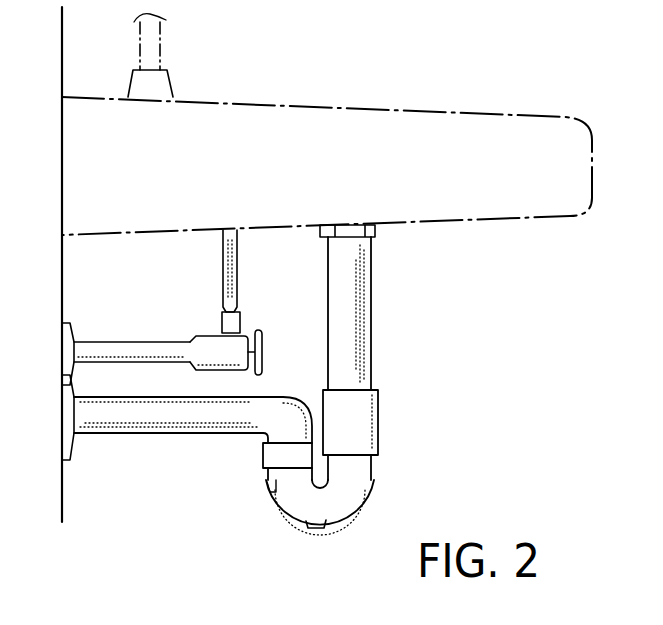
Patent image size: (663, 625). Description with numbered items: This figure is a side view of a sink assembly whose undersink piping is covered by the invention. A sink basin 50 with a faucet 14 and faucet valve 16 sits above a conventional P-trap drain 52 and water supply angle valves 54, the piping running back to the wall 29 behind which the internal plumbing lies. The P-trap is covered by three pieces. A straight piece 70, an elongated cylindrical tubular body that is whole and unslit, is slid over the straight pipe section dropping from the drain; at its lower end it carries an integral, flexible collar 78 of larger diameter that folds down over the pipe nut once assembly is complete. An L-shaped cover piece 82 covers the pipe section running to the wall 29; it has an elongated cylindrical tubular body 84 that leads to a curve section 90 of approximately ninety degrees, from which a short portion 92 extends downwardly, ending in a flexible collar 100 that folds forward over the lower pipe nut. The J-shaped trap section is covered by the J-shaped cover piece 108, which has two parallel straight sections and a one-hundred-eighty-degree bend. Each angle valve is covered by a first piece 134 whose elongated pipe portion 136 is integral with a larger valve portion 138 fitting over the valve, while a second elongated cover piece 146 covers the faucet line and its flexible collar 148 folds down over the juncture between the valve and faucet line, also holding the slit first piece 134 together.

The faucet 14 is at (161, 27).
The faucet valve 16 is at (172, 64).
The wall 29 is at (63, 507).
The sink basin 50 is at (322, 178).
The P-trap drain 52 is at (420, 331).
The water supply angle valve 54 is at (258, 329).
The straight cover piece 70 is at (366, 356).
The flexible collar 78 is at (366, 425).
The L-shaped cover piece 82 is at (116, 440).
The elongated cylindrical tubular body 84 is at (157, 440).
The curve section 90 is at (298, 403).
The short portion 92 is at (262, 446).
The flexible collar 100 is at (268, 488).
The J-shaped cover piece 108 is at (303, 526).
The first piece 134 is at (118, 338).
The pipe portion 136 is at (108, 360).
The valve portion 138 is at (204, 376).
The second elongated cover piece 146 is at (223, 258).
The flexible collar 148 is at (222, 323).